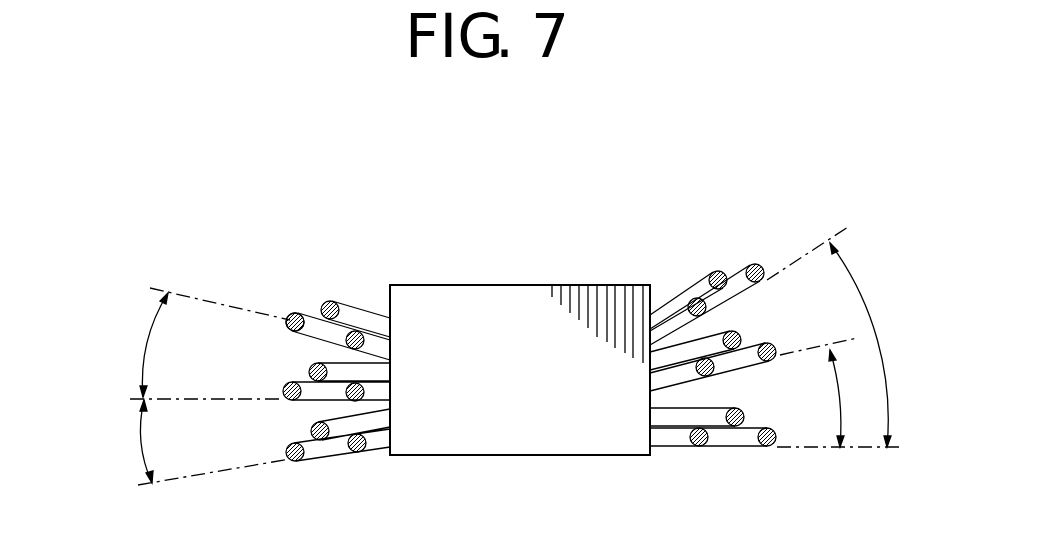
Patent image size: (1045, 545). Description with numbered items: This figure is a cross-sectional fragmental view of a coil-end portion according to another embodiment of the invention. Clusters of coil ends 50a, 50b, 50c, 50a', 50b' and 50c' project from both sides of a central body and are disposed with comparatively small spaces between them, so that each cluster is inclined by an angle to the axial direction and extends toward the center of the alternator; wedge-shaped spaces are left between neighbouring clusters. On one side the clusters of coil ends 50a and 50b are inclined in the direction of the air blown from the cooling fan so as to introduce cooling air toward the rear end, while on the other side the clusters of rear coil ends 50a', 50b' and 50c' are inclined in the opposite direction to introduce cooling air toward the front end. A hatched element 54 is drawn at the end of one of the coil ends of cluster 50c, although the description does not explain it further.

The optical fiber end 54 is at (291, 300).
The coil end cluster 50a is at (283, 435).
The coil end cluster 50b is at (284, 366).
The coil end cluster 50c is at (347, 278).
The coil end cluster 50a' is at (746, 461).
The coil end cluster 50b' is at (751, 340).
The coil end cluster 50c' is at (710, 265).